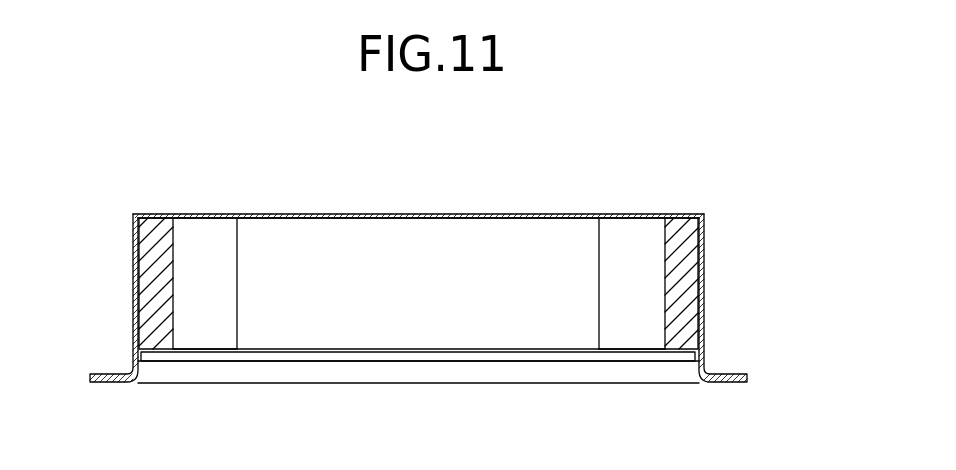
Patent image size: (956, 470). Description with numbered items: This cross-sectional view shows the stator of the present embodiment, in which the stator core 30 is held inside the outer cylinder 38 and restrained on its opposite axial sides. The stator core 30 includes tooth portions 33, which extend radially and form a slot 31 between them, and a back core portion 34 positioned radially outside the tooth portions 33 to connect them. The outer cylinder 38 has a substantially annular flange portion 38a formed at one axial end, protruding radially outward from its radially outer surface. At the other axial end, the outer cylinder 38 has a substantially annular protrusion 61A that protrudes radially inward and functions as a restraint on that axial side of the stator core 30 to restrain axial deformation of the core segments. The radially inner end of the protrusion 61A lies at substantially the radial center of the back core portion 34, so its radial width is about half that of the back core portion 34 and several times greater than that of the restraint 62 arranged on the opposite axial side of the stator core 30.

The stator core 30 is at (198, 211).
The slot 31 is at (210, 292).
The tooth portion 33 is at (230, 255).
The back core portion 34 is at (150, 273).
The outer cylinder 38 is at (708, 244).
The flange portion 38a is at (734, 373).
The protrusion 61A is at (340, 211).
The restraint 62 is at (350, 362).